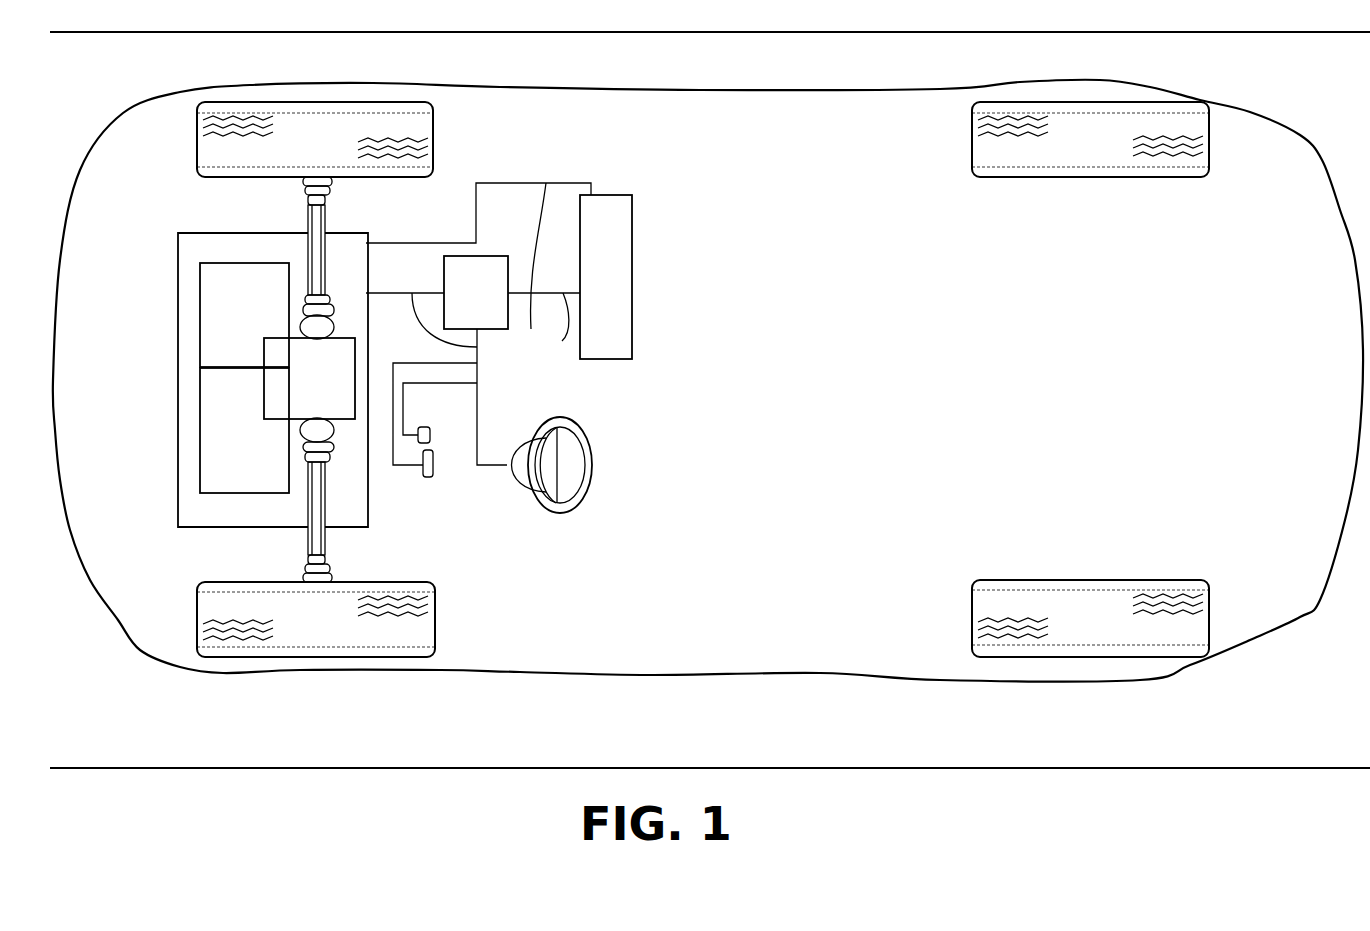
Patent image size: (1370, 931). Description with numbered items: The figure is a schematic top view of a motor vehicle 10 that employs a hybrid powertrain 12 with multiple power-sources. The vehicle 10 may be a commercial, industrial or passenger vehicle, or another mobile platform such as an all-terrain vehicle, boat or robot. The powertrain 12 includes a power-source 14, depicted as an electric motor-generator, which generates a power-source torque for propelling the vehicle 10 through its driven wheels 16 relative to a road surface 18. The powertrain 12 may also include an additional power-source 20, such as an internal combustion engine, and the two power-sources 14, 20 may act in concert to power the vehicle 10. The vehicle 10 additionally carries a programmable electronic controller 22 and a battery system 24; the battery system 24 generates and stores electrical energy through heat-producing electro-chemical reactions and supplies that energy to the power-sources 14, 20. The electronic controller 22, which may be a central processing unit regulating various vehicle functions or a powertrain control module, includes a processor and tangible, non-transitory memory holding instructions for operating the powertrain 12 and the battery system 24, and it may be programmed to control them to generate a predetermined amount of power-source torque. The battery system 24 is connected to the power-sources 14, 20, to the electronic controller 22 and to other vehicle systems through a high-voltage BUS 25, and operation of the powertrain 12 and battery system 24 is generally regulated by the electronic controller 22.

The motor vehicle 10 is at (655, 675).
The powertrain 12 is at (378, 488).
The power-source 14 is at (257, 304).
The driven wheels 16 is at (431, 132).
The road surface 18 is at (1261, 715).
The additional power-source 20 is at (257, 429).
The programmable electronic controller 22 is at (488, 303).
The battery system 24 is at (618, 303).
The high-voltage BUS 25 is at (531, 329).